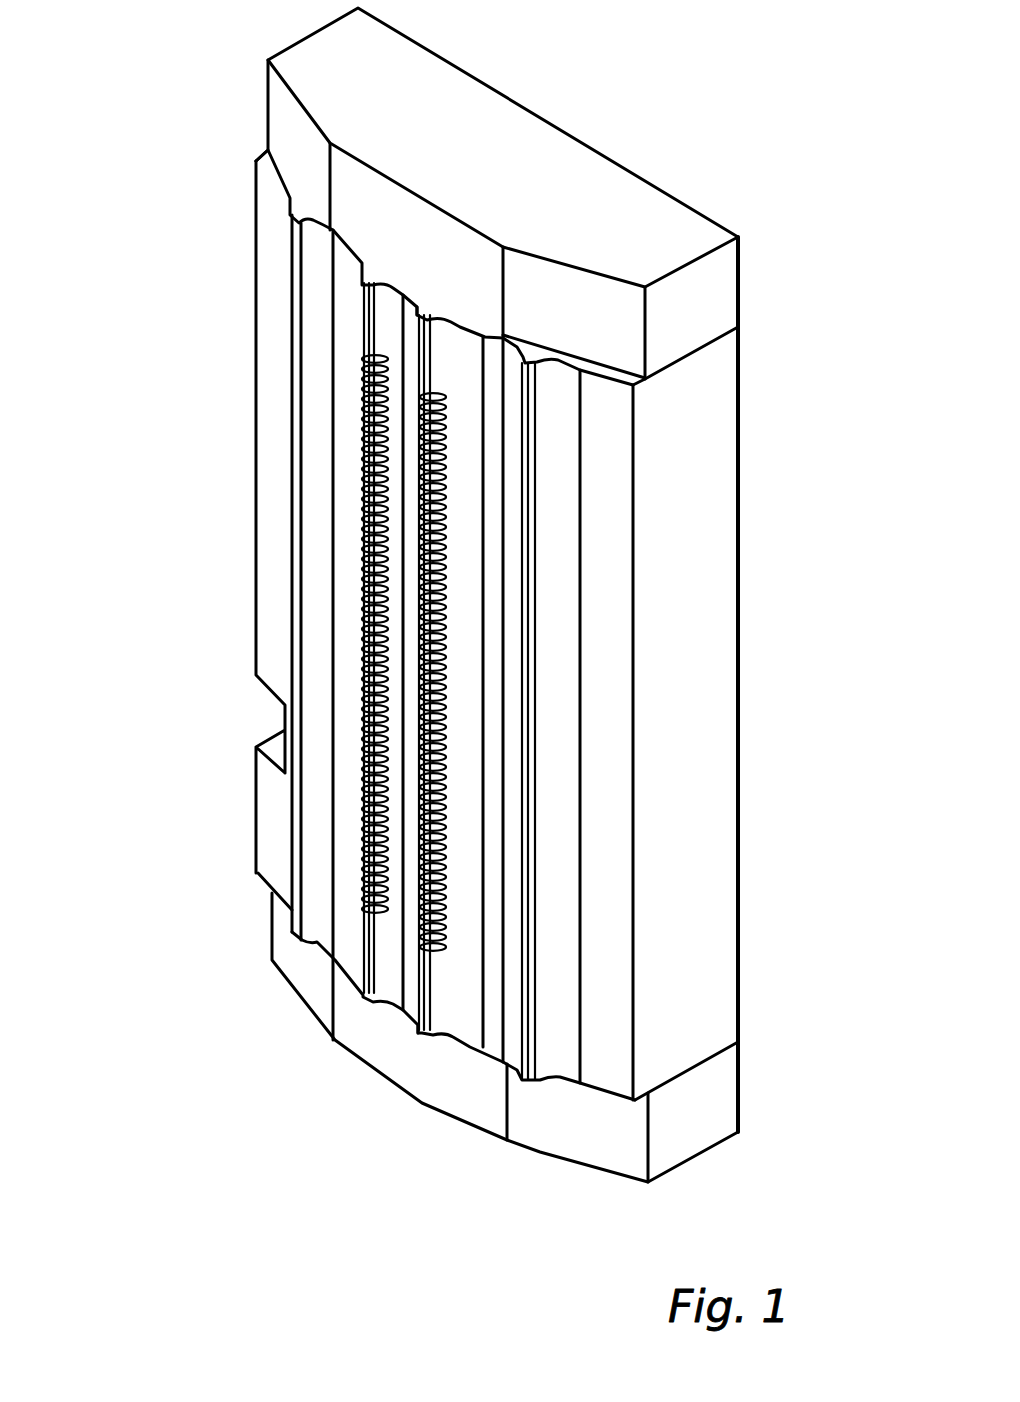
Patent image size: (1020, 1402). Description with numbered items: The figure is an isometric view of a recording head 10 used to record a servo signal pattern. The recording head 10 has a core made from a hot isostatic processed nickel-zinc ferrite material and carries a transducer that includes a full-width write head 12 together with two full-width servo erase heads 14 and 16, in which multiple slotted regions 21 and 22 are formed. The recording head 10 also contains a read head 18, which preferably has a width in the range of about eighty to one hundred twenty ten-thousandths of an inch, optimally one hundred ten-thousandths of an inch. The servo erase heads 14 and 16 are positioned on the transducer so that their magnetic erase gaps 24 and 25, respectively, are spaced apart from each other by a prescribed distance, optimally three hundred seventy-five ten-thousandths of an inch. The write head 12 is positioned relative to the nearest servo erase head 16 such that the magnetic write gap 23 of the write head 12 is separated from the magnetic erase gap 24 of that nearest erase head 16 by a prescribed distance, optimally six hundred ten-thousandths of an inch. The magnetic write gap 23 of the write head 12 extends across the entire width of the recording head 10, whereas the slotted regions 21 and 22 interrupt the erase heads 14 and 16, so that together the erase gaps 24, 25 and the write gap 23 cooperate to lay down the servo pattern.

The recording head 10 is at (126, 56).
The write head 12 is at (596, 1053).
The servo erase head 14 is at (384, 1018).
The servo erase head 16 is at (471, 1060).
The read head 18 is at (276, 627).
The slotted region 21 is at (448, 386).
The slotted region 22 is at (387, 340).
The magnetic write gap 23 is at (530, 1095).
The magnetic erase gap 24 is at (424, 1050).
The magnetic erase gap 25 is at (362, 1016).